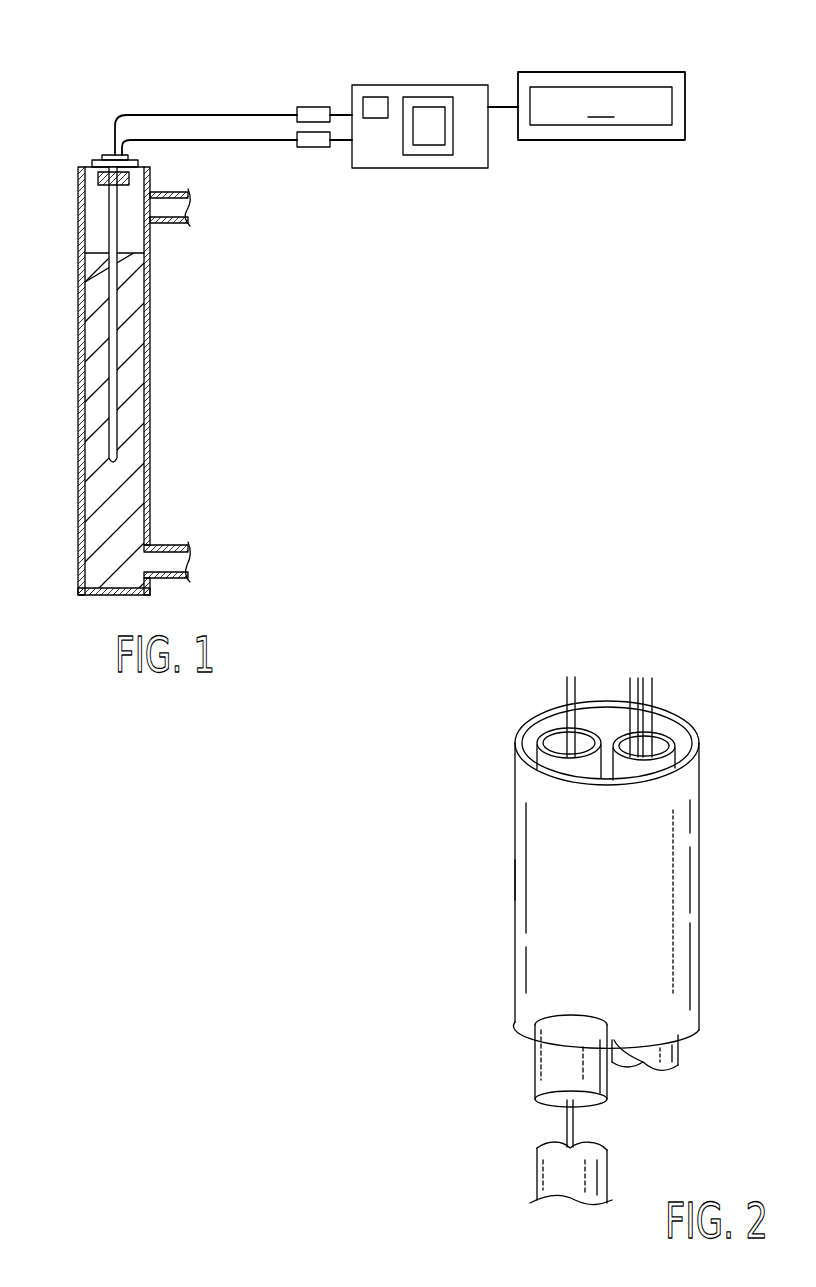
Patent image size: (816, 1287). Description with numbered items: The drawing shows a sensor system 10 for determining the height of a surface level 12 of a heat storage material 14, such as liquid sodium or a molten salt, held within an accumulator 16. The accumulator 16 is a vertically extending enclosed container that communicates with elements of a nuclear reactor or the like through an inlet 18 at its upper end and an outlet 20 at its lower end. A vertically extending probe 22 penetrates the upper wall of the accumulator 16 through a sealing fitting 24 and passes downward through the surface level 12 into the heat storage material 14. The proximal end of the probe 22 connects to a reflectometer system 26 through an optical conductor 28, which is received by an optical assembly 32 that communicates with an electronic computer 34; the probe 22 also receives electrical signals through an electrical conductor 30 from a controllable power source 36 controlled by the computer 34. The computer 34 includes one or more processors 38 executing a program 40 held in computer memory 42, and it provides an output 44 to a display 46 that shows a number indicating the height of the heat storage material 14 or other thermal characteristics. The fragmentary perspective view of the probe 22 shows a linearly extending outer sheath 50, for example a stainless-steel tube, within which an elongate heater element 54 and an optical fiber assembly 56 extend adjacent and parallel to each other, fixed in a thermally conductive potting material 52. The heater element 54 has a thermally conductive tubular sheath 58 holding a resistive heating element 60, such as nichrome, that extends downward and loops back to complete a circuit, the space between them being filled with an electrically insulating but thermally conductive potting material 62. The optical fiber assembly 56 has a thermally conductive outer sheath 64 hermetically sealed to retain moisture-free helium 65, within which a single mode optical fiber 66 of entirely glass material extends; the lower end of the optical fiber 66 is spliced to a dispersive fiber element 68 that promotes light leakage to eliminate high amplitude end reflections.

In FIG. 1, the sensor system 10 is at (148, 66).
In FIG. 1, the surface level 12 is at (100, 252).
In FIG. 1, the heat storage material 14 is at (138, 391).
In FIG. 1, the accumulator 16 is at (152, 463).
In FIG. 1, the inlet 18 is at (162, 192).
In FIG. 1, the outlet 20 is at (183, 545).
In FIG. 1, the probe 22 is at (108, 213).
In FIG. 2, the probe 22 is at (515, 886).
In FIG. 1, the sealing fitting 24 is at (102, 156).
In FIG. 1, the reflectometer system 26 is at (341, 45).
In FIG. 1, the optical conductor 28 is at (197, 115).
In FIG. 1, the electrical conductor 30 is at (233, 142).
In FIG. 1, the optical assembly 32 is at (312, 107).
In FIG. 1, the electronic computer 34 is at (420, 85).
In FIG. 1, the controllable power source 36 is at (313, 147).
In FIG. 1, the processor 38 is at (376, 97).
In FIG. 1, the program 40 is at (425, 145).
In FIG. 1, the computer memory 42 is at (453, 125).
In FIG. 1, the output 44 is at (504, 107).
In FIG. 1, the display 46 is at (598, 72).
In FIG. 2, the outer sheath 50 is at (690, 913).
In FIG. 2, the thermally conductive potting material 52 is at (605, 716).
In FIG. 2, the elongate heater element 54 is at (638, 778).
In FIG. 2, the optical fiber assembly 56 is at (556, 775).
In FIG. 2, the tubular sheath 58 is at (656, 760).
In FIG. 2, the resistive heating element 60 is at (652, 690).
In FIG. 2, the electrically insulating thermally conductive potting material 62 is at (662, 726).
In FIG. 2, the thermally conductive outer sheath 64 is at (550, 728).
In FIG. 2, the helium 65 is at (583, 740).
In FIG. 2, the single mode optical fiber 66 is at (567, 698).
In FIG. 2, the dispersive fiber element 68 is at (567, 1124).